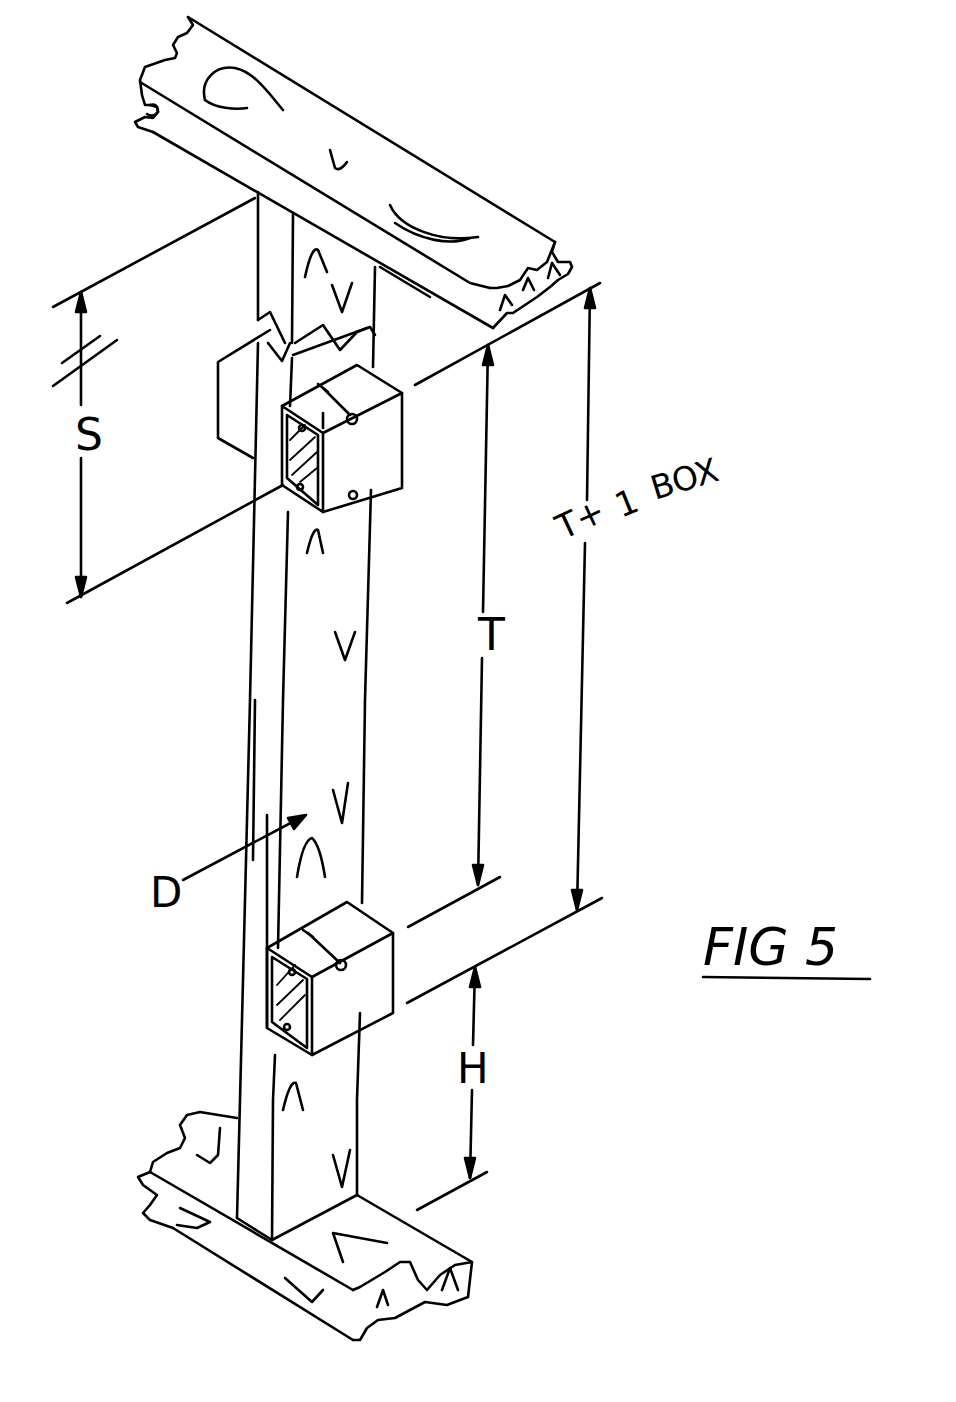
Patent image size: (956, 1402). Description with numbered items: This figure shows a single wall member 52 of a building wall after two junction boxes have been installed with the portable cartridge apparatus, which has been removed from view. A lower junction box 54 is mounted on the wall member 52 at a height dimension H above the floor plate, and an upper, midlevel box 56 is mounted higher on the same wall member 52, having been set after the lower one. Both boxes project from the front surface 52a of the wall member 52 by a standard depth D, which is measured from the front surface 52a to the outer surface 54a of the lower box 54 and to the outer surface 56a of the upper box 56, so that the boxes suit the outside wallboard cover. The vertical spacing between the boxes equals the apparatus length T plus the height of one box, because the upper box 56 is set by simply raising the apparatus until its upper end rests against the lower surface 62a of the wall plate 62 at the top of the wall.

The wall member 52 is at (313, 745).
The front surface of wall member 52a is at (268, 786).
The lower junction box 54 is at (332, 992).
The outer surface of lower box 54a is at (267, 1002).
The upper junction box 56 is at (357, 450).
The outer surface of upper box 56a is at (316, 494).
The wall plate 62 is at (205, 153).
The lower surface of wall plate 62a is at (424, 297).